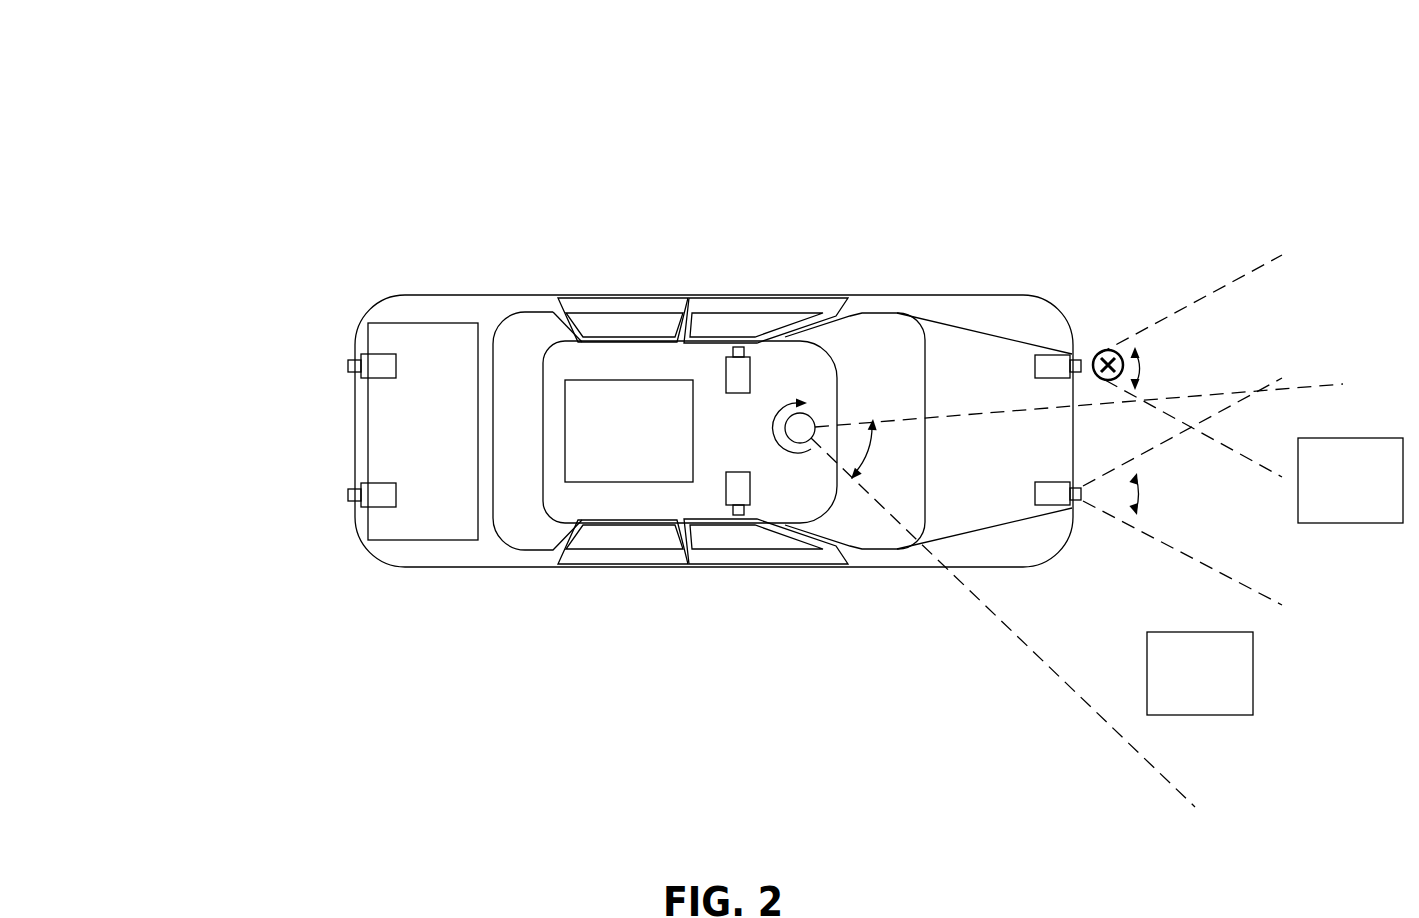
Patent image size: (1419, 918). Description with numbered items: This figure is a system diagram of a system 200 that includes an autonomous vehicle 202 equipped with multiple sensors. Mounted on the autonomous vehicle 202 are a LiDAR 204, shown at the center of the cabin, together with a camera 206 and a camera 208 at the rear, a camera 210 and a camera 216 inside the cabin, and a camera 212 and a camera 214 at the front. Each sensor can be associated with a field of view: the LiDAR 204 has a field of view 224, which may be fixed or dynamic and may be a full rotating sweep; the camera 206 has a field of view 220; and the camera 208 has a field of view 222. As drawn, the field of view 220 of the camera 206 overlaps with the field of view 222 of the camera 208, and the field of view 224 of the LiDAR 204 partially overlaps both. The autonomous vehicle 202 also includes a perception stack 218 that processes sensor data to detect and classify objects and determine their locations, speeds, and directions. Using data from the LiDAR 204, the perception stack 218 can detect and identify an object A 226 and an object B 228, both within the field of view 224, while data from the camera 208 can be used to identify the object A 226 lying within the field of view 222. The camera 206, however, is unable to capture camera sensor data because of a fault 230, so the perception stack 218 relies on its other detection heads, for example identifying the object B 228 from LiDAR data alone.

The system 200 is at (118, 64).
The autonomous vehicle 202 is at (1012, 295).
The LiDAR 204 is at (803, 425).
The camera 206 is at (1040, 372).
The camera 208 is at (1040, 500).
The camera 210 is at (738, 486).
The camera 212 is at (385, 494).
The camera 214 is at (385, 365).
The camera 216 is at (740, 386).
The perception stack 218 is at (611, 465).
The field of view 220 is at (1146, 366).
The field of view 222 is at (1147, 492).
The field of view 224 is at (872, 451).
The object A 226 is at (1332, 503).
The object B 228 is at (1182, 697).
The fault 230 is at (1100, 352).